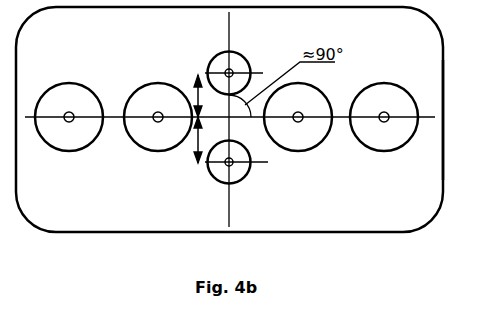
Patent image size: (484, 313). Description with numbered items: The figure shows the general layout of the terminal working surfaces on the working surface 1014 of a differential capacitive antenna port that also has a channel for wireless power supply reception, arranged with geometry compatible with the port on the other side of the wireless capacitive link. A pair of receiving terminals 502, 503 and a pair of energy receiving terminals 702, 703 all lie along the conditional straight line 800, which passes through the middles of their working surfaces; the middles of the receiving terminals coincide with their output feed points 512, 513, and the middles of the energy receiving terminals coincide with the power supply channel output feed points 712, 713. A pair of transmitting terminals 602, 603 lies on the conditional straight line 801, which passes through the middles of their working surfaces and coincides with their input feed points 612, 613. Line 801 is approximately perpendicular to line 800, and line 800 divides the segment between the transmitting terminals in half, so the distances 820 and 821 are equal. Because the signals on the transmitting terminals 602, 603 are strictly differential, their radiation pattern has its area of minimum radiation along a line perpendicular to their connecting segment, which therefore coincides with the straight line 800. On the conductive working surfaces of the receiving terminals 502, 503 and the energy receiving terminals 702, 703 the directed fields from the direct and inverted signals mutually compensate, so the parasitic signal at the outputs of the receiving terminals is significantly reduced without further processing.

The working surface of the port 1014 is at (70, 7).
The conditional straight line 800 is at (430, 122).
The conditional straight line 801 is at (231, 26).
The energy receiving terminal 702 is at (60, 90).
The power supply channel output feed point 712 is at (69, 123).
The energy receiving terminal 703 is at (156, 86).
The power supply channel output feed point 713 is at (158, 123).
The receiving terminal 502 is at (297, 87).
The output feed point 512 is at (299, 123).
The receiving terminal 503 is at (369, 88).
The output feed point 513 is at (384, 123).
The transmitting terminal 602 is at (213, 59).
The input feed point 612 is at (235, 69).
The transmitting terminal 603 is at (212, 177).
The input feed point 613 is at (235, 166).
The distance 820 is at (196, 87).
The distance 821 is at (197, 150).